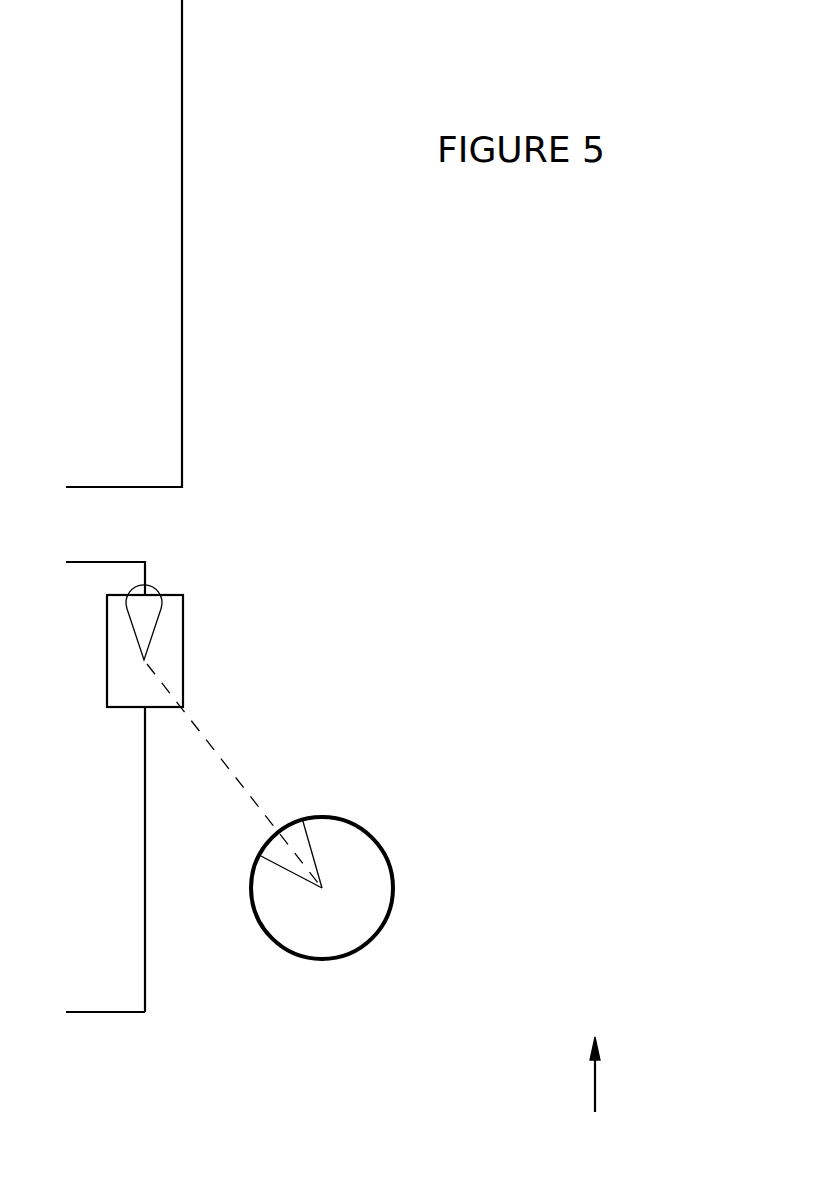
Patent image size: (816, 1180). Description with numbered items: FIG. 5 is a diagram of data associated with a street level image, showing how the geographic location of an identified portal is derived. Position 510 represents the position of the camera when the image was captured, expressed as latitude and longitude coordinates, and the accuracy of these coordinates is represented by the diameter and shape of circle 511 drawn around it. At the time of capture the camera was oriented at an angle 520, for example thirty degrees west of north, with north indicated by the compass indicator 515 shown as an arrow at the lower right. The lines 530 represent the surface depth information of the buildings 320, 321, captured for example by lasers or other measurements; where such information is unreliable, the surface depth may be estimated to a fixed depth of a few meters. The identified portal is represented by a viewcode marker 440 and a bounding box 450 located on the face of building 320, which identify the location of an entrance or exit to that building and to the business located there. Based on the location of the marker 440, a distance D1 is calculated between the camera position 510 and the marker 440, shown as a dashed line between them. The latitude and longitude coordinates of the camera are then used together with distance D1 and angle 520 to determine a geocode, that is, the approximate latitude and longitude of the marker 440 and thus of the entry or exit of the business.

The building 321 is at (182, 97).
The lines 530 is at (182, 348).
The building 320 is at (145, 990).
The bounding box 450 is at (183, 680).
The marker 440 is at (157, 627).
The distance D1 is at (220, 760).
The circle 511 is at (327, 963).
The angle 520 is at (313, 853).
The position 510 is at (327, 890).
The compass indicator 515 is at (596, 1093).